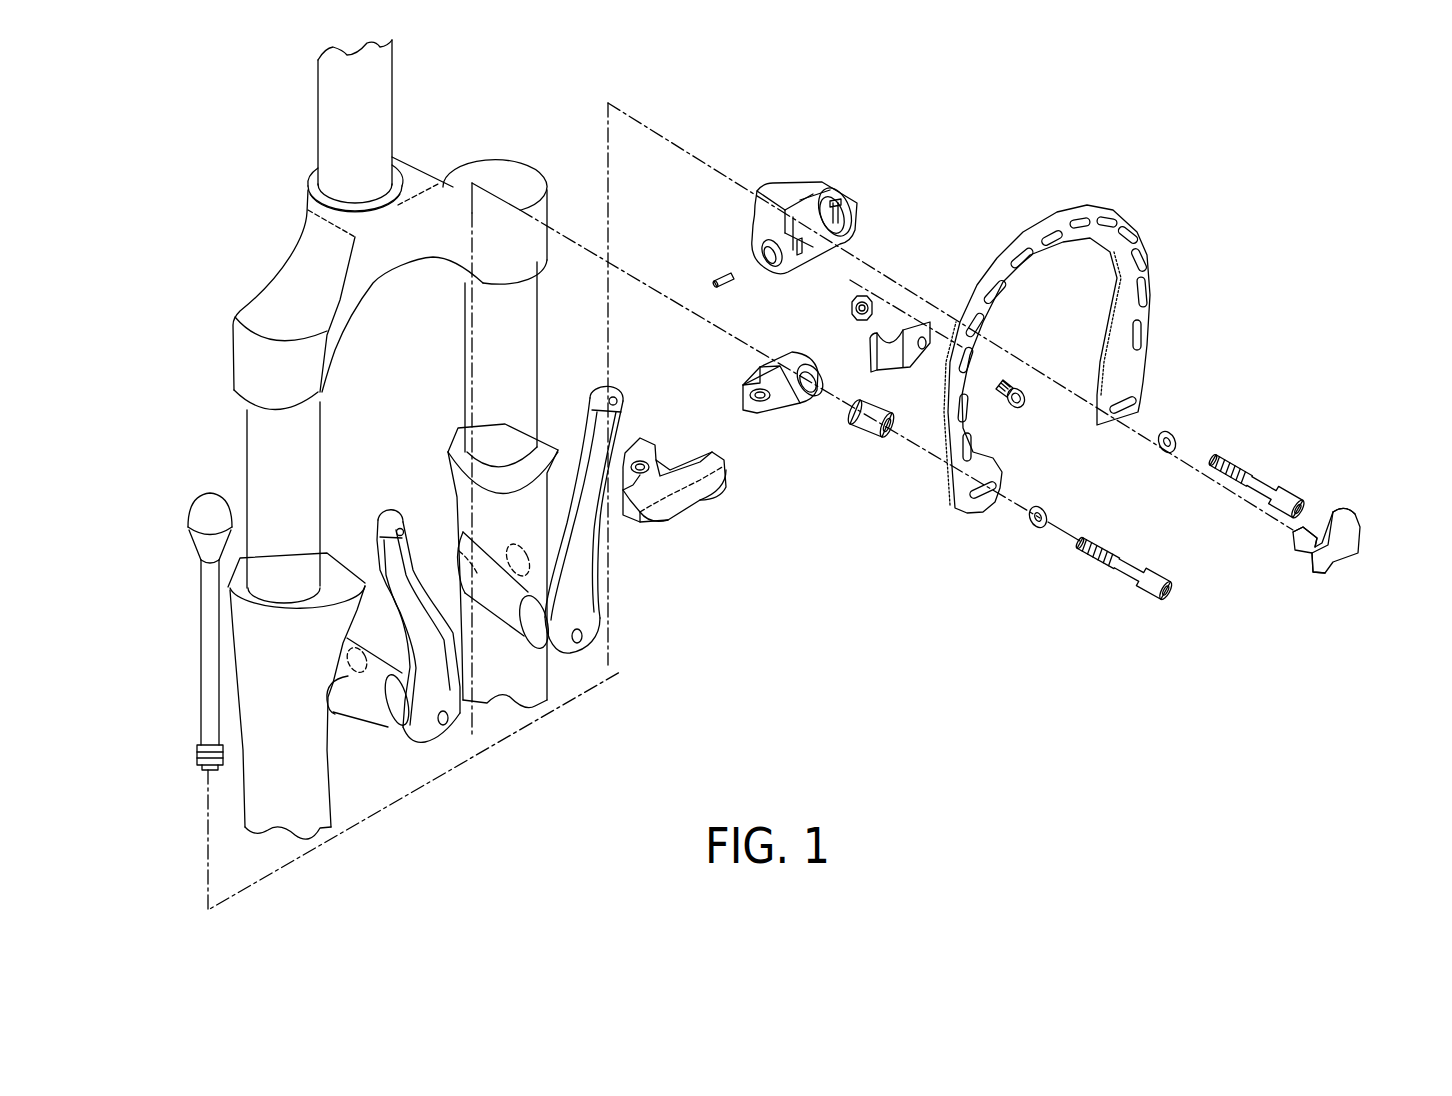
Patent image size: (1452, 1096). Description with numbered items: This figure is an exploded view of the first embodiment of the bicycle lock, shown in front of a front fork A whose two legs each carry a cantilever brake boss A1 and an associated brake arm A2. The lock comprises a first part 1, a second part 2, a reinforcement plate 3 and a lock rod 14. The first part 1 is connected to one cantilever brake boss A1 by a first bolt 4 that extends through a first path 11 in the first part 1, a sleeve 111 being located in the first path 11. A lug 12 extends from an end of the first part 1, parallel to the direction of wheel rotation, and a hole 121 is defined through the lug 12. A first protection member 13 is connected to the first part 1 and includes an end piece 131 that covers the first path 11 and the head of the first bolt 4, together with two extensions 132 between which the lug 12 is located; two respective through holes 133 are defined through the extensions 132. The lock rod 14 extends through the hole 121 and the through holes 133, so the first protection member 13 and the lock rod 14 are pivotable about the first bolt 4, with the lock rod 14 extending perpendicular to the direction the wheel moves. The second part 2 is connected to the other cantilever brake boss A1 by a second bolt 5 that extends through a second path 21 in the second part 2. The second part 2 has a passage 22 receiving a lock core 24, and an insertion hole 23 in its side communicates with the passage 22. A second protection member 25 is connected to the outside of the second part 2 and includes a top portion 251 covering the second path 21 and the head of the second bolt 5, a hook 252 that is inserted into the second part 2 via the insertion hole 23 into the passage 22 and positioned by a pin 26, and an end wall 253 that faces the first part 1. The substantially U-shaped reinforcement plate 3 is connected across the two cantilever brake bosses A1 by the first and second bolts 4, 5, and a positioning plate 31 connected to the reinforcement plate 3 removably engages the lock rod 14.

The front fork A is at (423, 205).
The cantilever brake boss A1 is at (492, 587).
The lever arm A2 is at (597, 420).
The lock rod 14 is at (206, 637).
The first part 1 is at (792, 398).
The first path 11 is at (808, 383).
The sleeve 111 is at (863, 417).
The lug 12 is at (767, 413).
The hole 121 is at (757, 393).
The first protection member 13 is at (670, 510).
The end piece 131 is at (700, 467).
The extensions 132 is at (633, 500).
The through holes 133 is at (643, 467).
The second part 2 is at (778, 192).
The second path 21 is at (793, 218).
The passage 22 is at (769, 262).
The insertion hole 23 is at (800, 257).
The lock core 24 is at (857, 216).
The pin 26 is at (722, 279).
The reinforcement plate 3 is at (1147, 271).
The positioning plate 31 is at (882, 337).
The first bolt 4 is at (1120, 562).
The second bolt 5 is at (1247, 480).
The second protection member 25 is at (1350, 538).
The top portion 251 is at (1342, 508).
The hook 252 is at (1308, 540).
The end wall 253 is at (1320, 567).